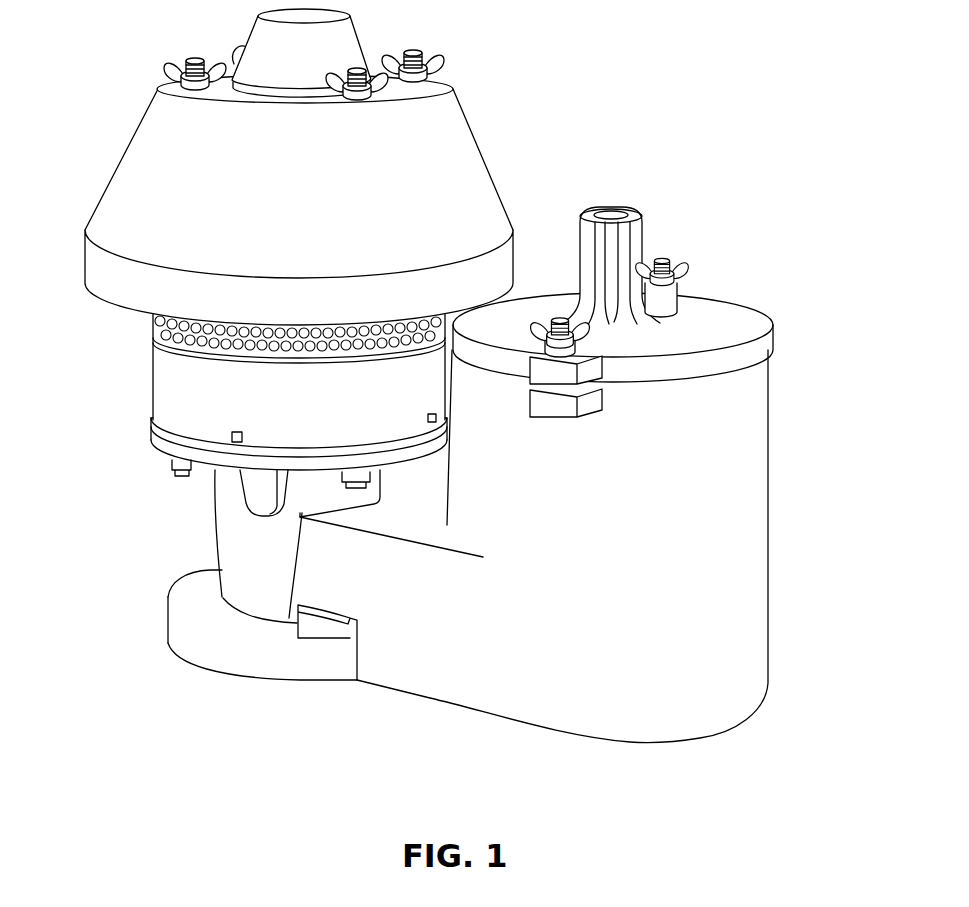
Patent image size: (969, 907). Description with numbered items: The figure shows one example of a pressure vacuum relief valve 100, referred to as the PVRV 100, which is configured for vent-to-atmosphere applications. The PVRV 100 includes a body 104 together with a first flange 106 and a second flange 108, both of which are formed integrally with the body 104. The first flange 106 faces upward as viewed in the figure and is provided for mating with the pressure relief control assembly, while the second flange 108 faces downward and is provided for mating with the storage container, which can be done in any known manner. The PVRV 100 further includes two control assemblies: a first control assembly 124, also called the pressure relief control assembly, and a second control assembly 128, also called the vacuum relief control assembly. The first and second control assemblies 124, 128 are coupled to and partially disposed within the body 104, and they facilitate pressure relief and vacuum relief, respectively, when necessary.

The pressure vacuum relief valve 100 is at (645, 103).
The body 104 is at (753, 528).
The first flange 106 is at (167, 445).
The second flange 108 is at (202, 650).
The first control assembly 124 is at (138, 384).
The second control assembly 128 is at (752, 297).